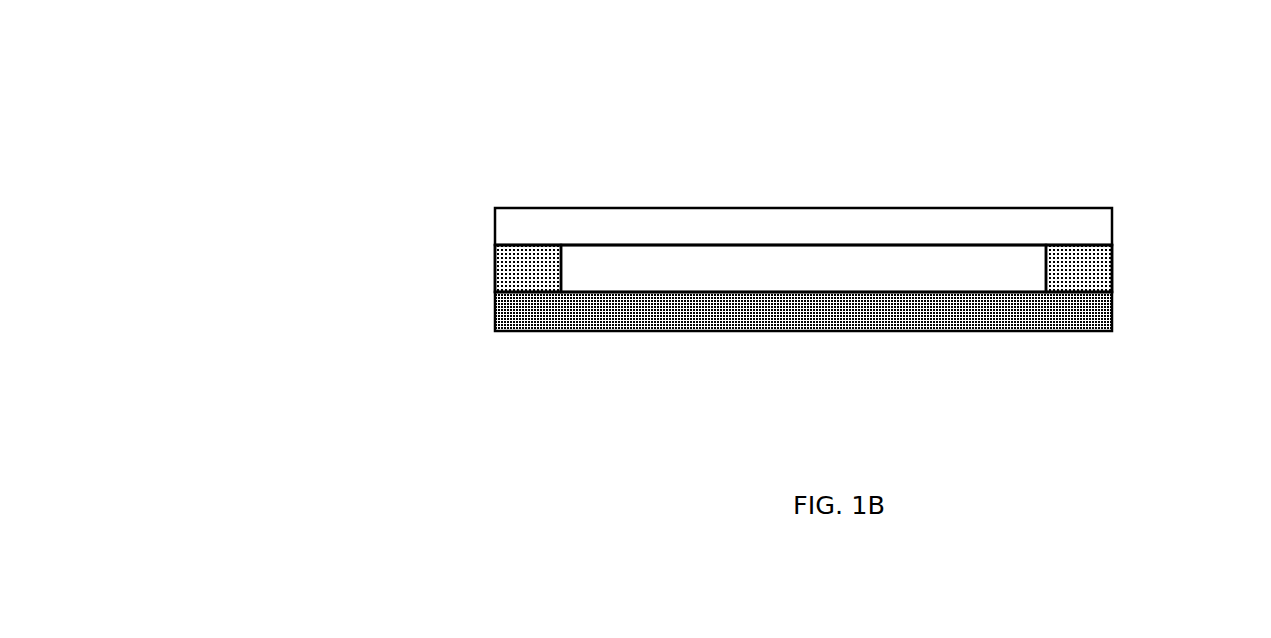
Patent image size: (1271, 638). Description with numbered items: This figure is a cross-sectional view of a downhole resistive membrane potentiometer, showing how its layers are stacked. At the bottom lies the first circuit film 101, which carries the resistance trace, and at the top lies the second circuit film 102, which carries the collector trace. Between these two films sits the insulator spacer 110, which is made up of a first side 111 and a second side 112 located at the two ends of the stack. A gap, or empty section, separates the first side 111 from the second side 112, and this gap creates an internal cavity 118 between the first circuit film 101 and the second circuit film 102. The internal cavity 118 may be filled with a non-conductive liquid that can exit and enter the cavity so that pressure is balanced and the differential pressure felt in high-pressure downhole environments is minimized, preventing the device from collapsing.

The first circuit film 101 is at (598, 312).
The second circuit film 102 is at (1087, 217).
The insulator spacer 110 is at (1068, 260).
The first side 111 is at (495, 267).
The second side 112 is at (1113, 272).
The internal cavity 118 is at (755, 262).